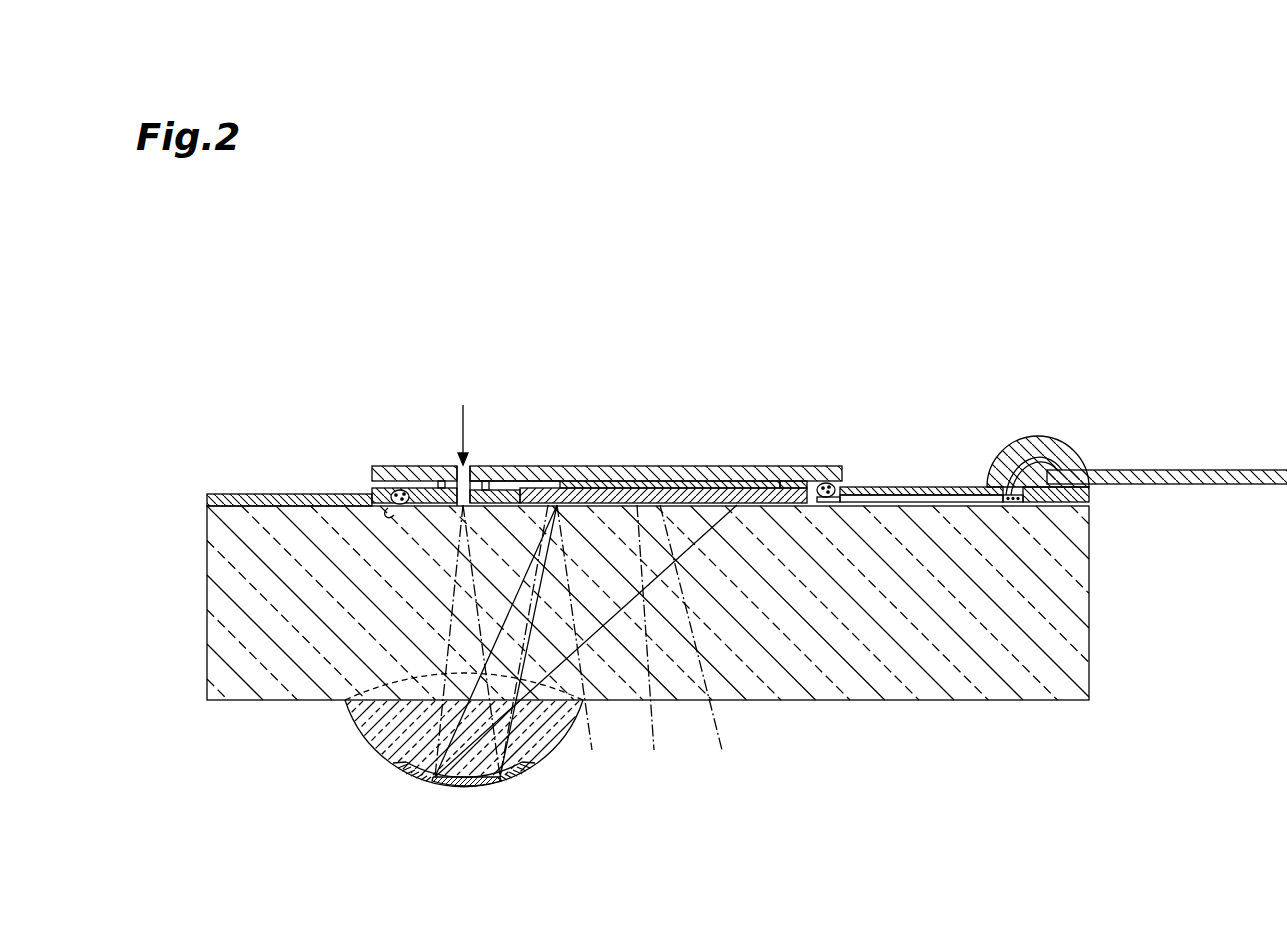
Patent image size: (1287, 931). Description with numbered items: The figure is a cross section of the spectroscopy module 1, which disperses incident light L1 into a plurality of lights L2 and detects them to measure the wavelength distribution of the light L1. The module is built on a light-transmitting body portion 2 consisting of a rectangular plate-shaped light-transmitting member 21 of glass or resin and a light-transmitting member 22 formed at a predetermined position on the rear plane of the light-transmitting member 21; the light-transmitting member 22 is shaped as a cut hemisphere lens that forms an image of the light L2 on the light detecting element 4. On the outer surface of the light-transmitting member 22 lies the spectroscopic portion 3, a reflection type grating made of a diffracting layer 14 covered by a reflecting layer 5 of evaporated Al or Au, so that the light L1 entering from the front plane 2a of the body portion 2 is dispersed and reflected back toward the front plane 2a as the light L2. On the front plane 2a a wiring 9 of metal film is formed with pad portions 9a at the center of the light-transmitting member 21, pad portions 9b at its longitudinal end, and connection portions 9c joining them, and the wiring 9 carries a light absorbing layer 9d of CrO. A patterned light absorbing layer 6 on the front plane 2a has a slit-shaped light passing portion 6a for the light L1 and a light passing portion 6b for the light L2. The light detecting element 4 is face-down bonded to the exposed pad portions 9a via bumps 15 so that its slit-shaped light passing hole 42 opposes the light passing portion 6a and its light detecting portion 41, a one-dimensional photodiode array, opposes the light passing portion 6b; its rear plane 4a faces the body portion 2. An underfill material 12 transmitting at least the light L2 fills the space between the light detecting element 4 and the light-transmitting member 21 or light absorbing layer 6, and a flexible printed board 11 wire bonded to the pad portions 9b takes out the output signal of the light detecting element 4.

The spectroscopy module 1 is at (303, 302).
The body portion 2 is at (208, 492).
The front plane 2a is at (238, 494).
The light-transmitting member 21 is at (214, 637).
The light-transmitting member 22 is at (362, 742).
The spectroscopic portion 3 is at (496, 805).
The reflecting layer 5 is at (466, 790).
The diffracting layer 14 is at (407, 778).
The light detecting element 4 is at (742, 480).
The light detecting portion 41 is at (682, 484).
The rear plane 4a is at (776, 486).
The underfill material 12 is at (612, 486).
The light absorbing layer 6 is at (299, 494).
The light passing portion 6a is at (470, 492).
The light passing portion 6b is at (535, 488).
The light passing hole 42 is at (447, 424).
The bump 15 is at (393, 505).
The wiring 9 is at (961, 404).
The pad portions 9a is at (394, 515).
The pad portions 9b is at (1010, 488).
The connection portions 9c is at (938, 487).
The light absorbing layer 9d is at (400, 504).
The flexible printed board 11 is at (1170, 470).
The light L1 is at (350, 722).
The light L2 is at (533, 617).